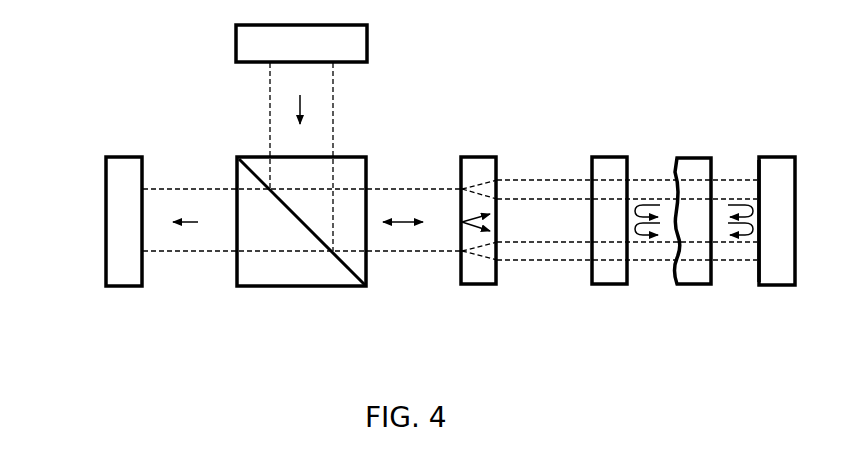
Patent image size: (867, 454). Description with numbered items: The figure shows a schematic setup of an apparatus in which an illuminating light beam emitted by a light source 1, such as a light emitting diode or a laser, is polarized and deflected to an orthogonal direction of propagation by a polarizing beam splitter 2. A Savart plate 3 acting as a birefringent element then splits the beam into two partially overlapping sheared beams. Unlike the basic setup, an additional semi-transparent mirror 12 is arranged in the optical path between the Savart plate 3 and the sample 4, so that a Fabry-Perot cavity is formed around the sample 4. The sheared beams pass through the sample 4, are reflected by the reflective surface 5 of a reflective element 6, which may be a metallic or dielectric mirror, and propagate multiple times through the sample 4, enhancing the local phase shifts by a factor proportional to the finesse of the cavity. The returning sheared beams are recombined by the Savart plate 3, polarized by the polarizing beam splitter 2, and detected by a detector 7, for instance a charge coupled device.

The light source 1 is at (222, 42).
The polarizing beam splitter 2 is at (350, 292).
The Savart plate 3 is at (486, 148).
The sample 4 is at (699, 148).
The reflective surface 5 is at (762, 165).
The reflective element 6 is at (784, 148).
The detector 7 is at (84, 251).
The semi-transparent mirror 12 is at (619, 148).